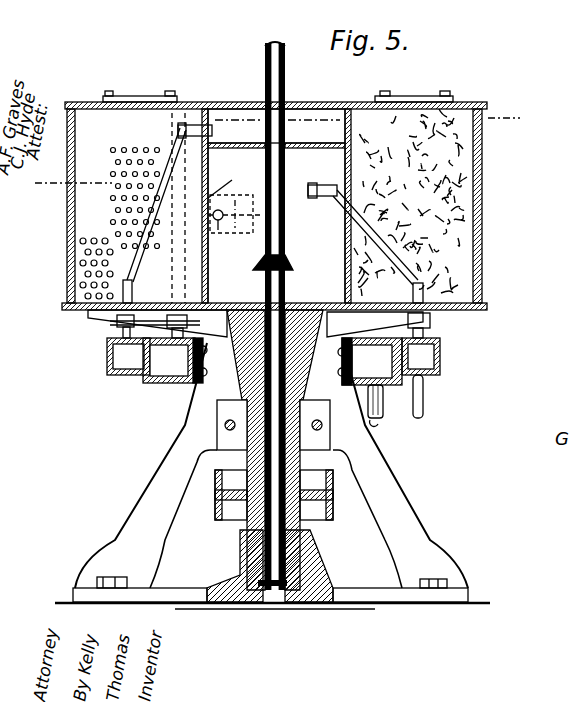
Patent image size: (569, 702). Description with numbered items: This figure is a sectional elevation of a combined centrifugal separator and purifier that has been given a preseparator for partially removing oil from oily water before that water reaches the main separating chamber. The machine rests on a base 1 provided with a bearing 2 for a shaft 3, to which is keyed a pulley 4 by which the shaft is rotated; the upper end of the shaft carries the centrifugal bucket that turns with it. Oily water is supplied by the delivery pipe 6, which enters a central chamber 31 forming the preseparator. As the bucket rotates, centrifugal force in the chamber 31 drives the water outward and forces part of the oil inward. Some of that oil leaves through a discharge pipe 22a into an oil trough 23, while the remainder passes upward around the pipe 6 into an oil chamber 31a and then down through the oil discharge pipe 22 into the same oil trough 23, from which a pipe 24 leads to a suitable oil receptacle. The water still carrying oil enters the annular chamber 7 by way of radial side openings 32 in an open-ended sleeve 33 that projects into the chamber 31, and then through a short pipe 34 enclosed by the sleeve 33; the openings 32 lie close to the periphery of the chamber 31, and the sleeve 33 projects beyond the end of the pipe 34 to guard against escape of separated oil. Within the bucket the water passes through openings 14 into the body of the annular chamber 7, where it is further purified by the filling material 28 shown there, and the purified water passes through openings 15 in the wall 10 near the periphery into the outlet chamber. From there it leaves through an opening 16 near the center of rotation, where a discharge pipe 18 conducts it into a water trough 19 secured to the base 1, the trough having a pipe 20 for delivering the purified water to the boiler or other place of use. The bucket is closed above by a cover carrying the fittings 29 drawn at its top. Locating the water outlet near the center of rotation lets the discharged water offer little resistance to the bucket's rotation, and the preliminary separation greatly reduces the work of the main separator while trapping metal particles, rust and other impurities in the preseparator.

The base 1 is at (160, 486).
The bearing 2 is at (217, 433).
The shaft 3 is at (255, 450).
The pulley 4 is at (217, 516).
The pipe 6 is at (275, 154).
The annular chamber 7 is at (73, 258).
The wall 10 is at (76, 150).
The openings 14 is at (150, 172).
The openings 15 is at (78, 263).
The opening 16 is at (278, 316).
The discharge-pipe 18 is at (171, 290).
The water trough 19 is at (272, 378).
The pipe 20 is at (378, 424).
The oil-discharge pipe 22 is at (178, 130).
The discharge-pipe 22a is at (450, 331).
The oil-trough 23 is at (108, 357).
The pipe 24 is at (424, 411).
The filter material 28 is at (432, 213).
The cover fitting 29 is at (152, 93).
The central chamber 31 is at (276, 225).
The oil-chamber 31a is at (276, 126).
The side openings 32 is at (235, 232).
The sleeve 33 is at (235, 203).
The short pipe 34 is at (220, 183).